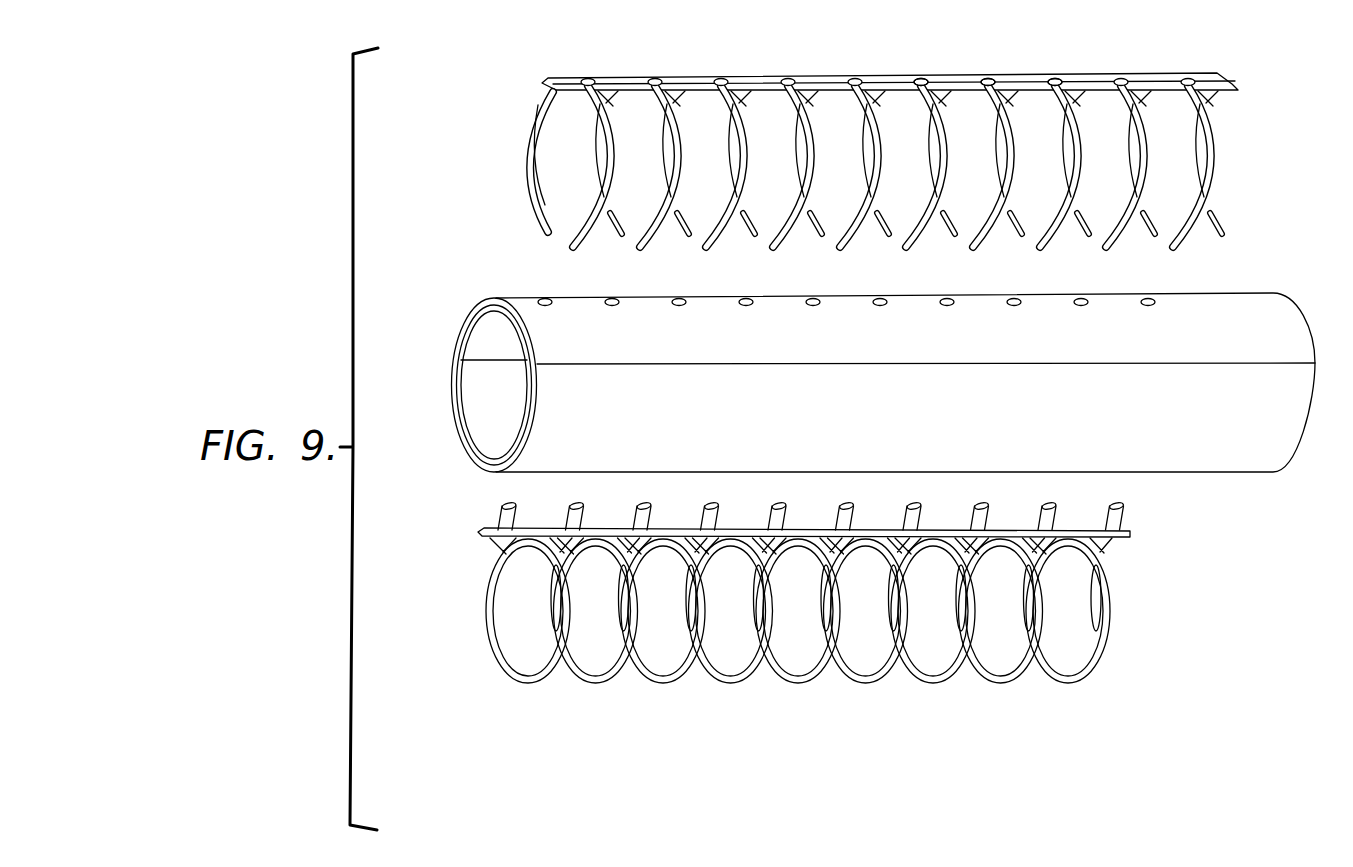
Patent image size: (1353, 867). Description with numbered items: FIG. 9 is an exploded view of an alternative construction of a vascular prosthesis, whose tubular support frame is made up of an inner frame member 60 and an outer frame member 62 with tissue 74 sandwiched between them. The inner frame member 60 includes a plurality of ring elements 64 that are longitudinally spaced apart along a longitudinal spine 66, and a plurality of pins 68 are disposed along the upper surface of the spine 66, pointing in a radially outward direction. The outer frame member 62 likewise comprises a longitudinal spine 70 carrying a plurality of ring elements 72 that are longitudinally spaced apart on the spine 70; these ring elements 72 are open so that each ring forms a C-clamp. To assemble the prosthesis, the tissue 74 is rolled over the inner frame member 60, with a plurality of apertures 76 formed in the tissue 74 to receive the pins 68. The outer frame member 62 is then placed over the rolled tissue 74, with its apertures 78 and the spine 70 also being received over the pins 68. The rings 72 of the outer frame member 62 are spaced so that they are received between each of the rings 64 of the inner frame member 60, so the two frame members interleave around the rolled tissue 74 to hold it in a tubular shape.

The inner frame member 60 is at (845, 612).
The outer frame member 62 is at (880, 137).
The ring elements 64 is at (655, 684).
The longitudinal spine 66 is at (1132, 533).
The pins 68 is at (1062, 506).
The longitudinal spine 70 is at (1218, 78).
The ring elements 72 is at (737, 185).
The tissue 74 is at (884, 360).
The apertures 76 is at (680, 297).
The apertures 78 is at (1047, 80).